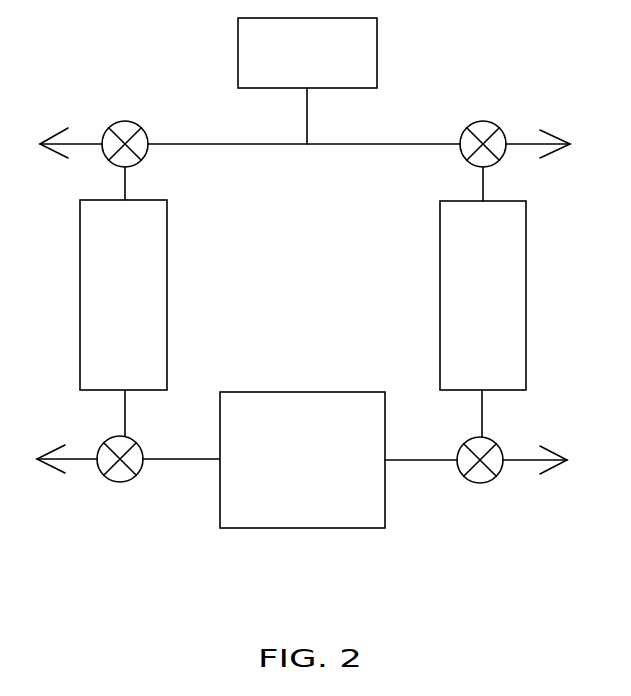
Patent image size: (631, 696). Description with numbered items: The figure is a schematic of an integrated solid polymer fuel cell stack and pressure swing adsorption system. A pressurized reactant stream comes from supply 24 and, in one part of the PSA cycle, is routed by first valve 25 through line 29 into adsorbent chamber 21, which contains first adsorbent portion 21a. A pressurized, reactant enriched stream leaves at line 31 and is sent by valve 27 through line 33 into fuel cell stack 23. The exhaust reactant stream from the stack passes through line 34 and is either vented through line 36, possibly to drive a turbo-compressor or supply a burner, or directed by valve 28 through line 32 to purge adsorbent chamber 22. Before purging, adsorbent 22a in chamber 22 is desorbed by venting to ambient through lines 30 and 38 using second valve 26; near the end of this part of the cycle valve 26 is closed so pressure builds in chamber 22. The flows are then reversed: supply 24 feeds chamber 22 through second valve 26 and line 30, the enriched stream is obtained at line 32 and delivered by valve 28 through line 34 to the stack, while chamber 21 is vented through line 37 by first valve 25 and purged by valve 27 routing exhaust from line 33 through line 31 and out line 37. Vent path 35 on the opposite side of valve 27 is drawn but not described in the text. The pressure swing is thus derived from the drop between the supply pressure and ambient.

The adsorbent chamber 21 is at (89, 295).
The first adsorbent portion 21a is at (110, 337).
The adsorbent chamber 22 is at (519, 295).
The adsorbent 22a is at (495, 337).
The fuel cell stack 23 is at (328, 473).
The supply 24 is at (353, 53).
The first valve 25 is at (120, 118).
The second valve 26 is at (488, 118).
The valve 27 is at (130, 478).
The valve 28 is at (472, 482).
The line 29 is at (122, 183).
The line 30 is at (485, 190).
The line 31 is at (118, 424).
The line 32 is at (485, 424).
The line 33 is at (178, 455).
The line 34 is at (428, 457).
The output port 35 is at (80, 462).
The line 36 is at (518, 462).
The line 37 is at (100, 140).
The line 38 is at (522, 135).